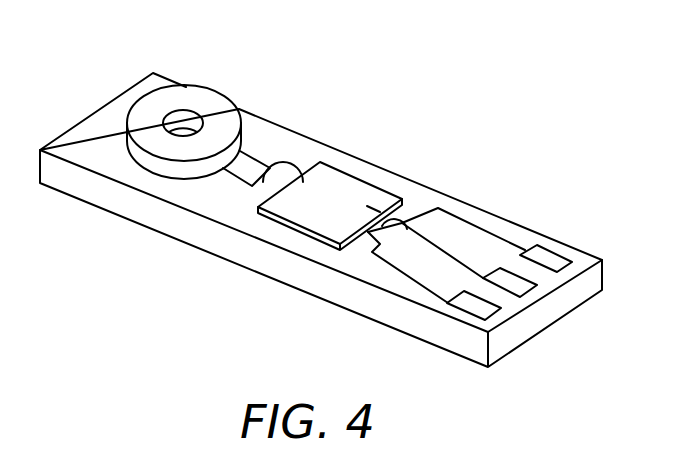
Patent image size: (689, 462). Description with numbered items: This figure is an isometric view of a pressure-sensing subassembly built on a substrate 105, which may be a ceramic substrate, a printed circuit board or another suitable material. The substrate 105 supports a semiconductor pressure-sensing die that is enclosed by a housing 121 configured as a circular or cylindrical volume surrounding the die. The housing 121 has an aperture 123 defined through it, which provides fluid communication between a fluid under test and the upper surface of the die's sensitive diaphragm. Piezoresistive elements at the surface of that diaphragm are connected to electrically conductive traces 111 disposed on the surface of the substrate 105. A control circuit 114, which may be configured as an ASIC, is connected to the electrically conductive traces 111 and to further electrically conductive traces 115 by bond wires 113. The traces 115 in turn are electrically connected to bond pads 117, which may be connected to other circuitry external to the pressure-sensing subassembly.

The substrate 105 is at (185, 227).
The electrically conductive traces 111 is at (250, 163).
The bond wires 113 is at (303, 183).
The control circuit 114 is at (346, 180).
The electrically conductive traces 115 is at (427, 278).
The bond pads 117 is at (504, 282).
The housing 121 is at (212, 102).
The aperture 123 is at (181, 124).